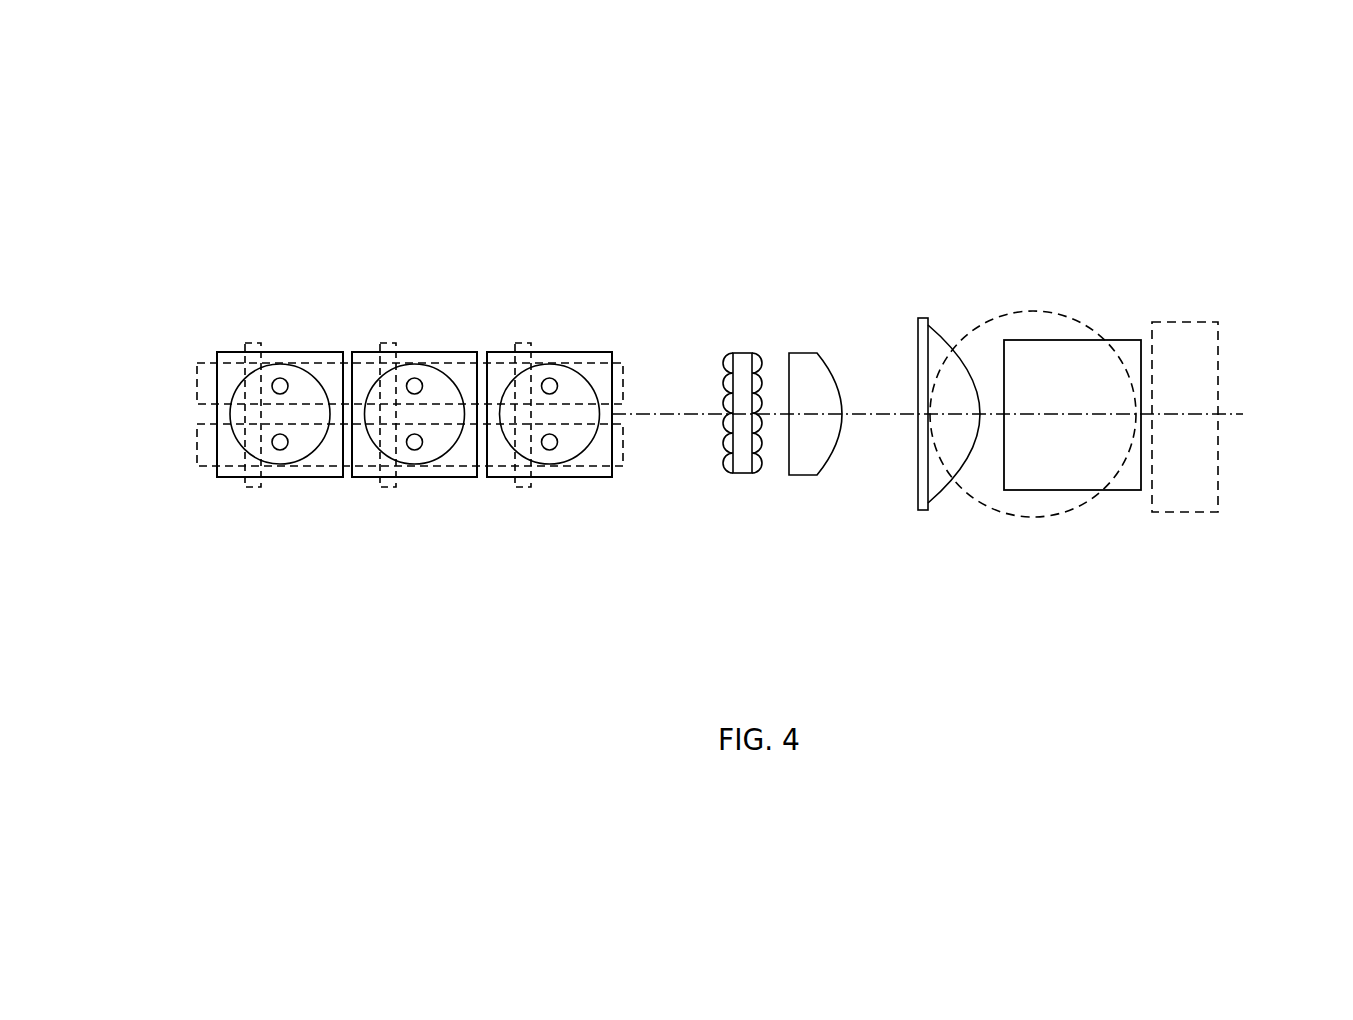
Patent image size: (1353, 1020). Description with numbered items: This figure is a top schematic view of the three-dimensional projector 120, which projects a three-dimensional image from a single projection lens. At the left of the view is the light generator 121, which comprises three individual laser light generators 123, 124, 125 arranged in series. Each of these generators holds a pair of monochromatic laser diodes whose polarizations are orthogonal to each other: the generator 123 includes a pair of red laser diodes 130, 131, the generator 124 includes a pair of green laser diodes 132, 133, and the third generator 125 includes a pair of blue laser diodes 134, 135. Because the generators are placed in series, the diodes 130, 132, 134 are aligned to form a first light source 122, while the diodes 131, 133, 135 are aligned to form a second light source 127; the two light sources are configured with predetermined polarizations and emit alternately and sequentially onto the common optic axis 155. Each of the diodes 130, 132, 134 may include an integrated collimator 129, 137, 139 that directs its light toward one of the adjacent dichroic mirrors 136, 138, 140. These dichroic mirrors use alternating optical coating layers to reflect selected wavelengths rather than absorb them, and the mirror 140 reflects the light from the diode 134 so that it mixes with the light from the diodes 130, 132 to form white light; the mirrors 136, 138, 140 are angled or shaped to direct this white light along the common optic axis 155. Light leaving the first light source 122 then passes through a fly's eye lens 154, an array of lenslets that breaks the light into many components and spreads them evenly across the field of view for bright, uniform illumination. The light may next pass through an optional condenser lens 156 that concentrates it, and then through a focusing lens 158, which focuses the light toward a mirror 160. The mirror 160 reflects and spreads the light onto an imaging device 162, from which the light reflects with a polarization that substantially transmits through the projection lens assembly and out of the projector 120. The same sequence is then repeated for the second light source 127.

The projector 120 is at (408, 165).
The light generator 121 is at (189, 532).
The first light source 122 is at (197, 453).
The laser light generator 123 is at (226, 350).
The laser light generator 124 is at (360, 351).
The laser light generator 125 is at (498, 351).
The second light source 127 is at (197, 388).
The integrated collimator 129 is at (315, 452).
The red laser diode 130 is at (286, 449).
The red laser diode 131 is at (288, 383).
The green laser diode 132 is at (413, 450).
The green laser diode 133 is at (415, 378).
The blue laser diode 134 is at (555, 447).
The blue laser diode 135 is at (554, 379).
The dichroic mirror 136 is at (253, 488).
The integrated collimator 137 is at (445, 458).
The dichroic mirror 138 is at (388, 488).
The integrated collimator 139 is at (588, 448).
The dichroic mirror 140 is at (523, 490).
The fly's eye lens 154 is at (745, 353).
The common optic axis 155 is at (1245, 420).
The condenser lens 156 is at (802, 352).
The focusing lens 158 is at (917, 343).
The mirror 160 is at (1183, 323).
The imaging device 162 is at (1118, 492).